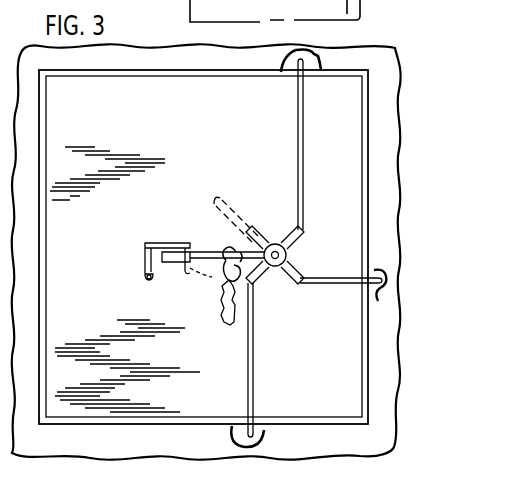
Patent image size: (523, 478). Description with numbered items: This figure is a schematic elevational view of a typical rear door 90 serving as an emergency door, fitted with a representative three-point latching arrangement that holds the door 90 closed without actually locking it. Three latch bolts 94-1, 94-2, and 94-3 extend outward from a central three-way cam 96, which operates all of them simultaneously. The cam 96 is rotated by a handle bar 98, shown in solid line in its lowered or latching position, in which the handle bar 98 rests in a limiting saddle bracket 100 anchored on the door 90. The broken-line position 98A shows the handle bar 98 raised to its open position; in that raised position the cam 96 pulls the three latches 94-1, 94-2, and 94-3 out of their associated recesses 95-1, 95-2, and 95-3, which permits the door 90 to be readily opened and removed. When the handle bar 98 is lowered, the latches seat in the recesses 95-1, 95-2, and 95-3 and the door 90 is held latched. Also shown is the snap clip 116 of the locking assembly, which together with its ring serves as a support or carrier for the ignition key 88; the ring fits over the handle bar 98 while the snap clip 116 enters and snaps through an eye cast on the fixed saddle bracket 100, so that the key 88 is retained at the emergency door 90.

The rear door 90 is at (174, 131).
The three-way cam 96 is at (288, 255).
The latch bolt 94-1 is at (298, 111).
The latch bolt 94-2 is at (331, 285).
The latch bolt 94-3 is at (248, 343).
The recess 95-1 is at (290, 67).
The recess 95-2 is at (386, 270).
The recess 95-3 is at (243, 427).
The handle bar 98 is at (208, 246).
The handle bar open position 98A is at (234, 213).
The saddle bracket 100 is at (144, 254).
The snap clip 116 is at (208, 280).
The ignition key 88 is at (228, 297).